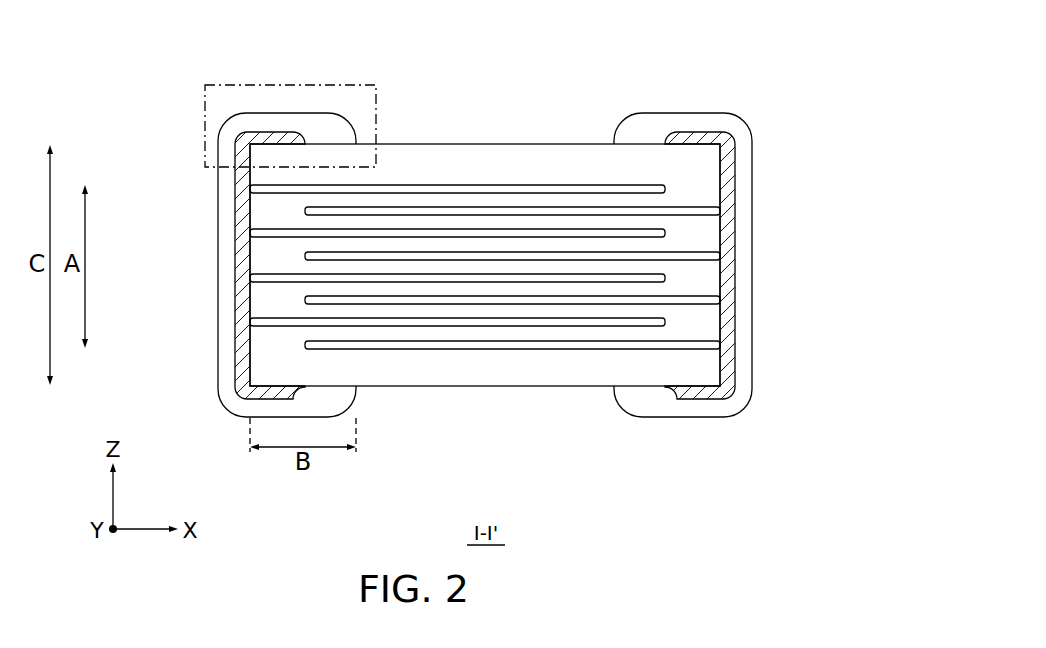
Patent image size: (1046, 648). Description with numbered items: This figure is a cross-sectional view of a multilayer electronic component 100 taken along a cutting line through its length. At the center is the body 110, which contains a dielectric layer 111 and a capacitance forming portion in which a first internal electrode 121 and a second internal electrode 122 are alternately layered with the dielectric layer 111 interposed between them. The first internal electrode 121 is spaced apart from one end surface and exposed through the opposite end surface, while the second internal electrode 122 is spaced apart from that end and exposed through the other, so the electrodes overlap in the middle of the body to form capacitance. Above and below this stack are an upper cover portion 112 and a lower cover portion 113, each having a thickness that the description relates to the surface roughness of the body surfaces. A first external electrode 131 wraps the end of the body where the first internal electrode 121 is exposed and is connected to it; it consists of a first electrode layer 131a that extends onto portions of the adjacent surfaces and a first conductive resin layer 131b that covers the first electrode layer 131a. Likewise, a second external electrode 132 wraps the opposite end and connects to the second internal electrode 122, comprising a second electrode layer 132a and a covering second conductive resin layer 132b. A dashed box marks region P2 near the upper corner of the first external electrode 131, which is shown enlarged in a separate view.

The multilayer electronic component 100 is at (150, 26).
The body 110 is at (402, 145).
The dielectric layer 111 is at (470, 220).
The upper cover portion 112 is at (252, 145).
The lower cover portion 113 is at (252, 348).
The first internal electrode 121 is at (540, 186).
The second internal electrode 122 is at (605, 209).
The first external electrode 131 is at (222, 265).
The first electrode layer 131a is at (242, 245).
The first conductive resin layer 131b is at (145, 243).
The second external electrode 132 is at (753, 265).
The second electrode layer 132a is at (730, 206).
The second conductive resin layer 132b is at (840, 198).
The region P2 is at (285, 85).